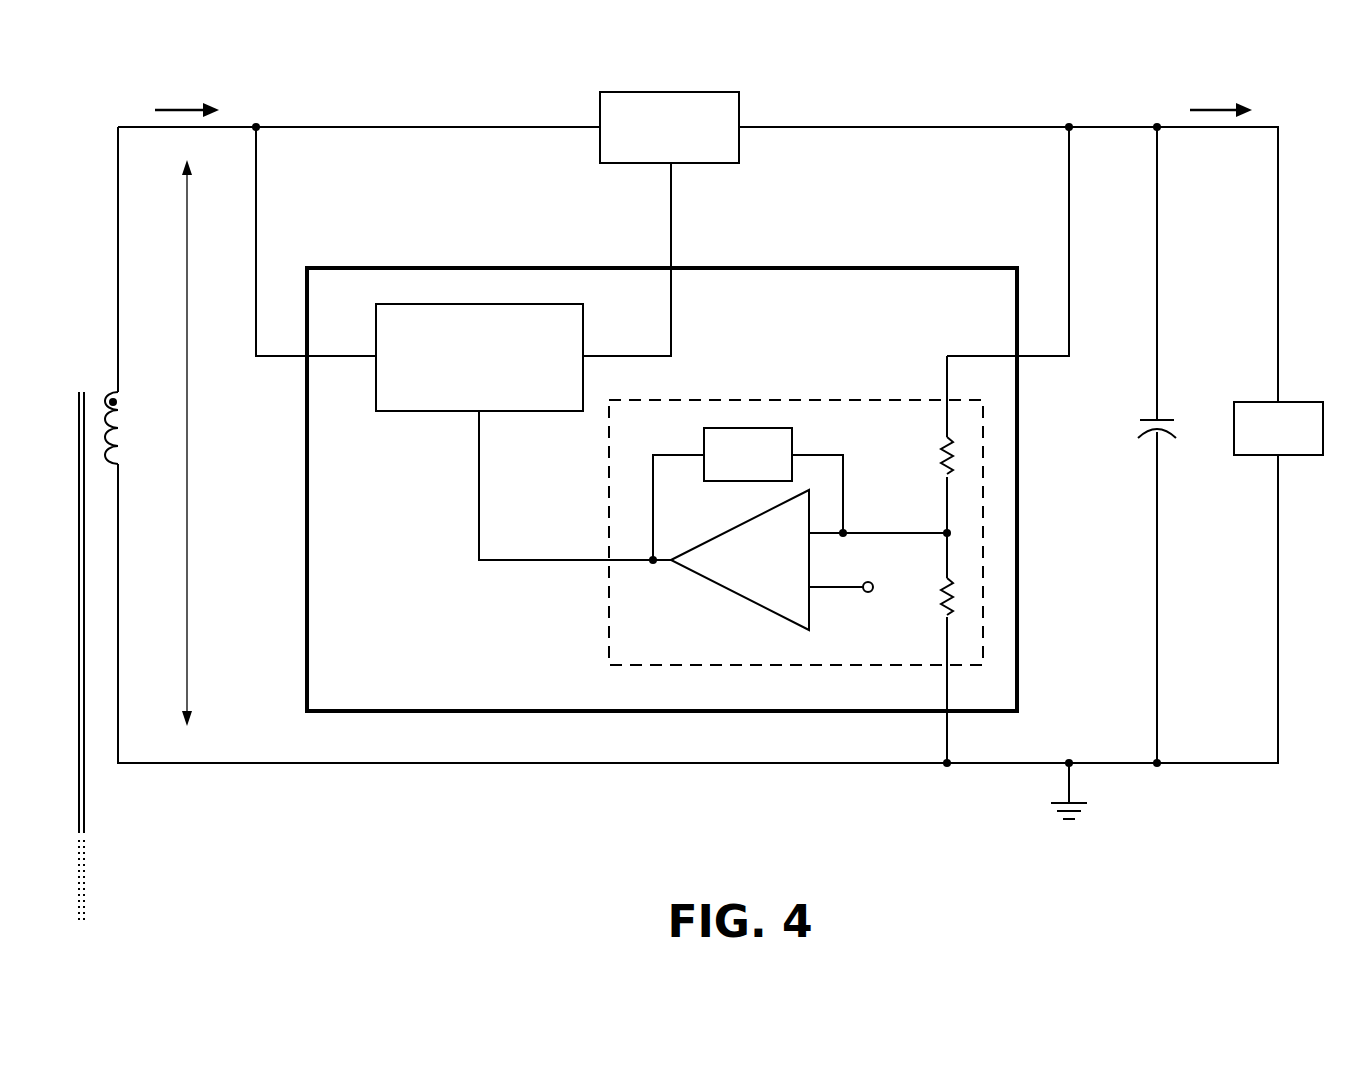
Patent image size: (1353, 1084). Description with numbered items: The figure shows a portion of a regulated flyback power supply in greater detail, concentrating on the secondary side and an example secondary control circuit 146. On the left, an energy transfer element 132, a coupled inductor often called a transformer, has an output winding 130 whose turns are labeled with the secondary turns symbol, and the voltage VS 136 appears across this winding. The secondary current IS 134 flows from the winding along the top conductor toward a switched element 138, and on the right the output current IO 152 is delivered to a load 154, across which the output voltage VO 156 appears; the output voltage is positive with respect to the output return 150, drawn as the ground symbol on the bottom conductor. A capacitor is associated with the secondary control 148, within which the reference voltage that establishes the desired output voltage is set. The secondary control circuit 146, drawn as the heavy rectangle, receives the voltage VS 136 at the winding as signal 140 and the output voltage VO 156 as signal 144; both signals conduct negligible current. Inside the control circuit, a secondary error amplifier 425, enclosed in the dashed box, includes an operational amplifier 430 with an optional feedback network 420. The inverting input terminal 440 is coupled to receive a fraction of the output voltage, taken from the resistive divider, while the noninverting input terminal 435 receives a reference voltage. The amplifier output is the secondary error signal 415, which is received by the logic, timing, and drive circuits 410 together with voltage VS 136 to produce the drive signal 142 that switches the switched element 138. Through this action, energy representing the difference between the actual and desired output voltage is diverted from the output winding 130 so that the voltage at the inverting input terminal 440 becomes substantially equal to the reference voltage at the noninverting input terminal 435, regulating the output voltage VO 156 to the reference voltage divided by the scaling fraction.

The output winding 130 is at (114, 446).
The energy transfer element L1 132 is at (92, 814).
The secondary current Is 134 is at (168, 101).
The voltage VS 136 is at (203, 452).
The switched element 138 is at (673, 88).
The signal 140 is at (258, 232).
The drive signal 142 is at (673, 236).
The signal 144 is at (1072, 228).
The secondary control circuit 146 is at (504, 264).
The secondary control 148 is at (1145, 448).
The output return 150 is at (1090, 782).
The output current IO 152 is at (1202, 101).
The load 154 is at (1292, 392).
The output voltage VO 156 is at (1205, 446).
The logic, timing, and drive circuits 410 is at (410, 418).
The secondary error signal 415 is at (517, 568).
The feedback network HF2 420 is at (714, 486).
The secondary error amplifier 425 is at (822, 396).
The operational amplifier 430 is at (809, 560).
The noninverting input terminal 435 is at (870, 598).
The inverting input terminal 440 is at (852, 520).